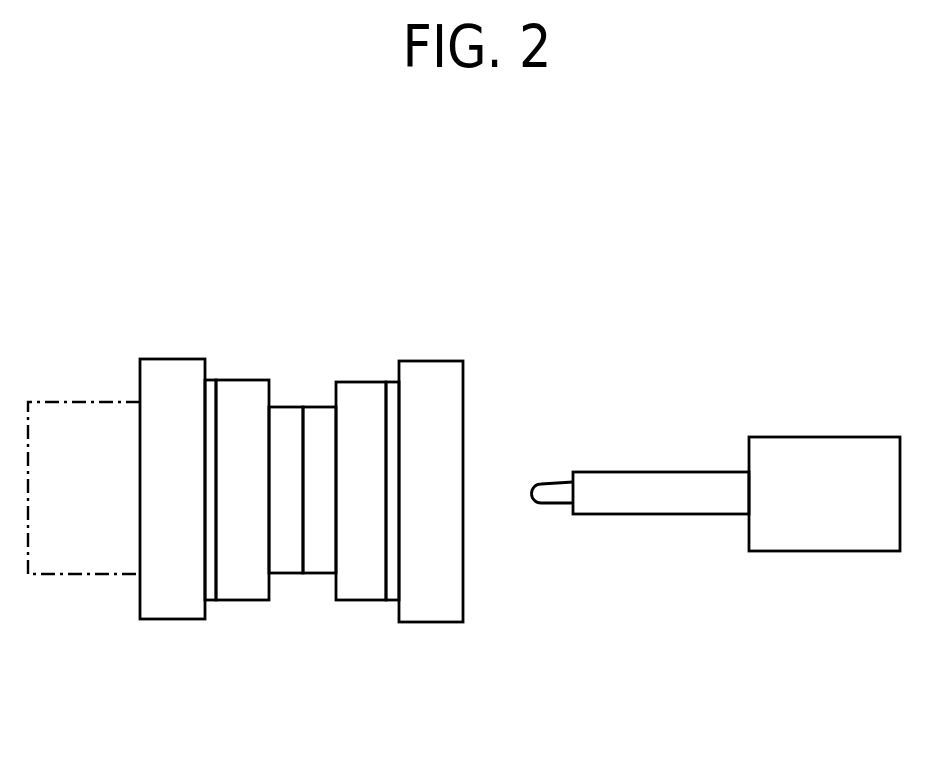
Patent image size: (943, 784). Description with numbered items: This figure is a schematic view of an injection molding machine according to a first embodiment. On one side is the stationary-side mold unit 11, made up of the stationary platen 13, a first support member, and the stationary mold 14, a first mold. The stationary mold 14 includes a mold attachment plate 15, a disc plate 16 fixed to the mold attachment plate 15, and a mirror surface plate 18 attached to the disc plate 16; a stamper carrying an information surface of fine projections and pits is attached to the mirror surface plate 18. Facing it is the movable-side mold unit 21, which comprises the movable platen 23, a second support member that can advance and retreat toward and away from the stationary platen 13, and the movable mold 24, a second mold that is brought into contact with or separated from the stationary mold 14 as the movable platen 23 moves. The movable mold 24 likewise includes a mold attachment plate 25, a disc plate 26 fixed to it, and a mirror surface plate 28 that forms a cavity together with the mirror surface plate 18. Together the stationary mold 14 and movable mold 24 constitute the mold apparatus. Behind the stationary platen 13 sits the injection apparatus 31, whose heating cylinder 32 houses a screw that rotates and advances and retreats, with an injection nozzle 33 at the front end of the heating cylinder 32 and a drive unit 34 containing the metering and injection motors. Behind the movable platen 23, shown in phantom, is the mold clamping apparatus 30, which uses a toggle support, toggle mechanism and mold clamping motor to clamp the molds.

The stationary-side mold unit 11 is at (368, 261).
The stationary platen 13 is at (425, 360).
The stationary mold 14 is at (373, 613).
The mold attachment plate 15 is at (395, 380).
The disc plate 16 is at (347, 505).
The mirror surface plate 18 is at (313, 406).
The movable-side mold unit 21 is at (197, 261).
The movable platen 23 is at (155, 358).
The movable mold 24 is at (228, 613).
The mold attachment plate 25 is at (209, 378).
The disc plate 26 is at (226, 505).
The mirror surface plate 28 is at (287, 406).
The mold clamping apparatus 30 is at (74, 505).
The injection apparatus 31 is at (808, 430).
The heating cylinder 32 is at (636, 465).
The injection nozzle 33 is at (557, 480).
The drive unit 34 is at (813, 509).